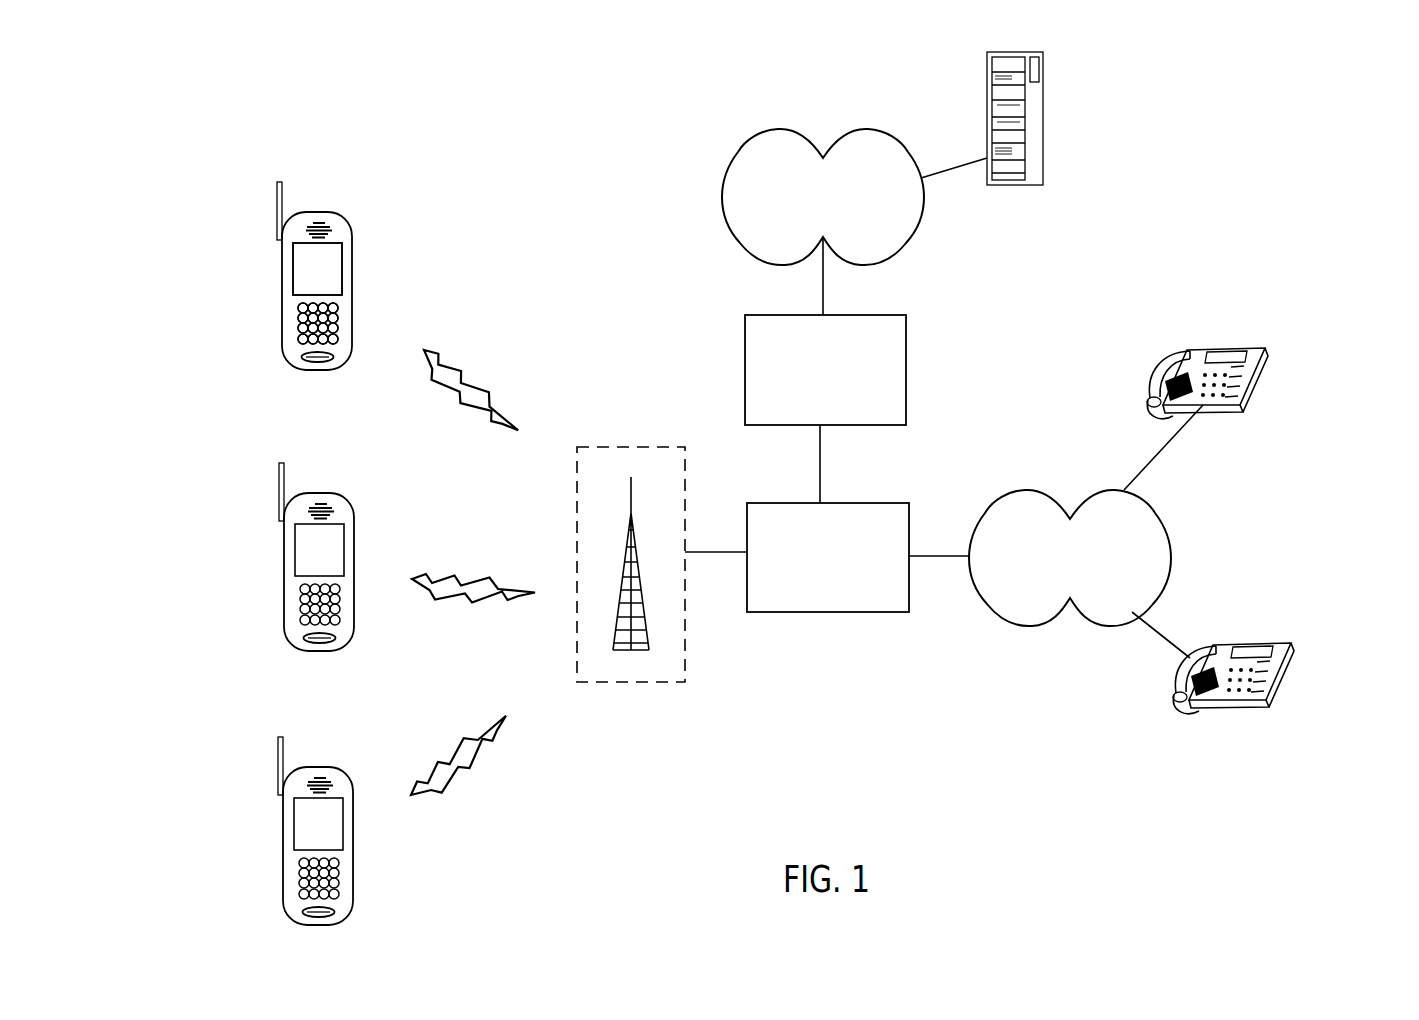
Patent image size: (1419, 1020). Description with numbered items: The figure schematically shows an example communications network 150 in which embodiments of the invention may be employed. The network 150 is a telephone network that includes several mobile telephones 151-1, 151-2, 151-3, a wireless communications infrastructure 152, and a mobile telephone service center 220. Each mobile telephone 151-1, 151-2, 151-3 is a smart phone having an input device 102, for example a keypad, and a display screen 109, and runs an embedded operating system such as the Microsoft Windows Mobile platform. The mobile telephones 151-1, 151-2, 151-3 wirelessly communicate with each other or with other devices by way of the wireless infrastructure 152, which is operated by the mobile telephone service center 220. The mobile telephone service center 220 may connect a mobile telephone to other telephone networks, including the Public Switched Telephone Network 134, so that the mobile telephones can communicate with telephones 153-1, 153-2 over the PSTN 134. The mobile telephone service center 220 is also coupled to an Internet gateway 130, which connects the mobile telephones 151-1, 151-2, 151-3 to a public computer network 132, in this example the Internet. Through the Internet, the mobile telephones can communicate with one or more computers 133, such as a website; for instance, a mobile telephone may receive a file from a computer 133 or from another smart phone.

The communications network 150 is at (314, 108).
The mobile telephone 151-1 is at (262, 272).
The mobile telephone 151-2 is at (262, 555).
The mobile telephone 151-3 is at (260, 831).
The display screen 109 is at (342, 258).
The input device 102 is at (298, 325).
The wireless communications infrastructure 152 is at (626, 447).
The Internet gateway 130 is at (906, 367).
The public computer network 132 is at (790, 130).
The computer 133 is at (1048, 108).
The Public Switched Telephone Network 134 is at (1035, 490).
The mobile telephone service center 220 is at (790, 612).
The telephone 153-1 is at (1258, 378).
The telephone 153-2 is at (1283, 672).